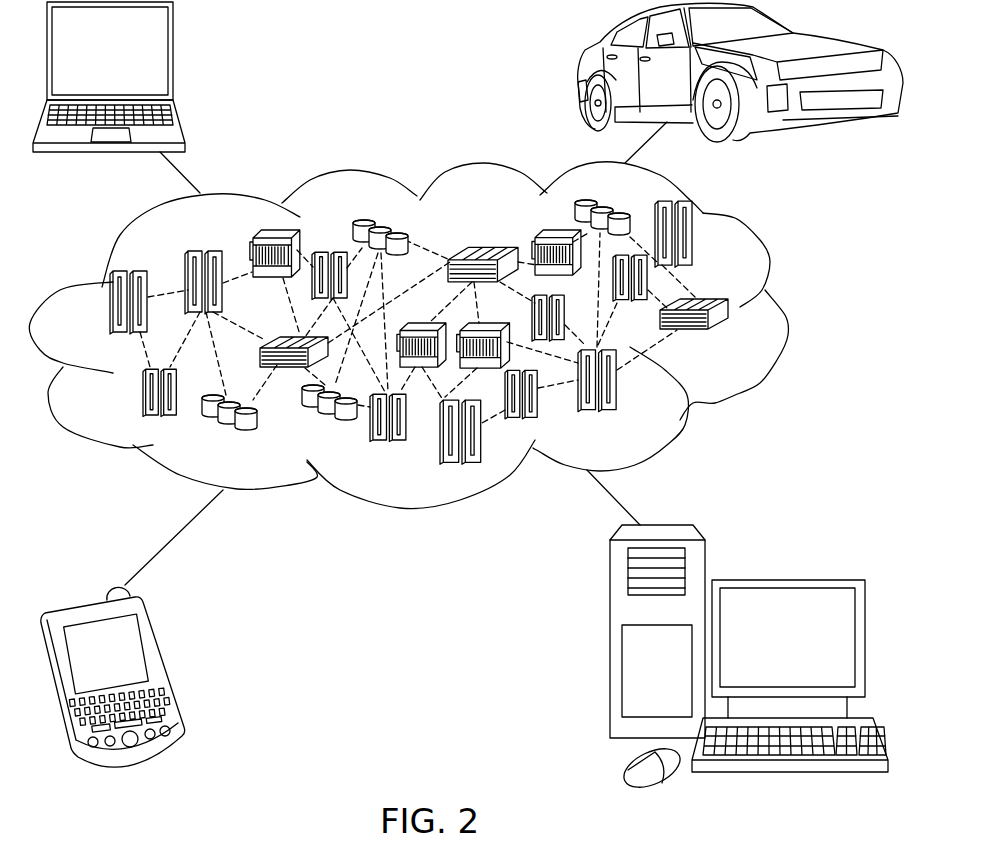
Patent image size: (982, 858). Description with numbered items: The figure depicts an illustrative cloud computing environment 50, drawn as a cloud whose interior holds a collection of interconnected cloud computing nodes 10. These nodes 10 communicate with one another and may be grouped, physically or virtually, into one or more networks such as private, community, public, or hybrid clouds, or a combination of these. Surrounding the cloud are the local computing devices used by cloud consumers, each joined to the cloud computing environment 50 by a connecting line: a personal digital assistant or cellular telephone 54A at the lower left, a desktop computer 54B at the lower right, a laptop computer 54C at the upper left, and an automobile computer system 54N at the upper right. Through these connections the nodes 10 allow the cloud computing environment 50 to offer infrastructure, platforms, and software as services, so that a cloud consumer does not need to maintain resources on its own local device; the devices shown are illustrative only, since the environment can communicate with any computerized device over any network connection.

The laptop computer 54C is at (173, 57).
The automobile computer system 54N is at (580, 72).
The personal digital assistant (PDA) or cellular telephone 54A is at (165, 665).
The desktop computer 54B is at (783, 579).
The cloud computing environment 50 is at (433, 335).
The cloud computing nodes 10 is at (737, 341).